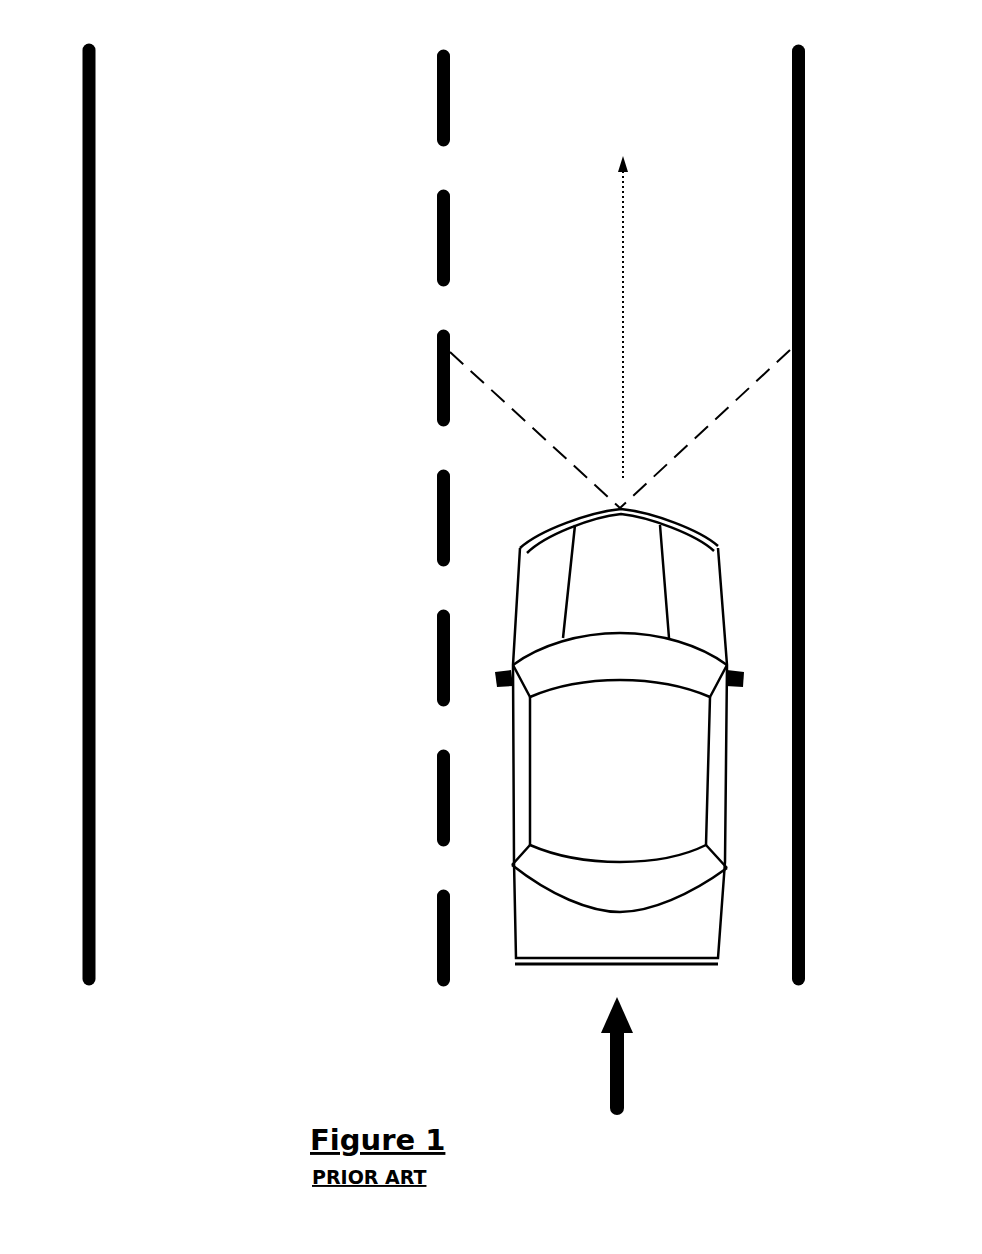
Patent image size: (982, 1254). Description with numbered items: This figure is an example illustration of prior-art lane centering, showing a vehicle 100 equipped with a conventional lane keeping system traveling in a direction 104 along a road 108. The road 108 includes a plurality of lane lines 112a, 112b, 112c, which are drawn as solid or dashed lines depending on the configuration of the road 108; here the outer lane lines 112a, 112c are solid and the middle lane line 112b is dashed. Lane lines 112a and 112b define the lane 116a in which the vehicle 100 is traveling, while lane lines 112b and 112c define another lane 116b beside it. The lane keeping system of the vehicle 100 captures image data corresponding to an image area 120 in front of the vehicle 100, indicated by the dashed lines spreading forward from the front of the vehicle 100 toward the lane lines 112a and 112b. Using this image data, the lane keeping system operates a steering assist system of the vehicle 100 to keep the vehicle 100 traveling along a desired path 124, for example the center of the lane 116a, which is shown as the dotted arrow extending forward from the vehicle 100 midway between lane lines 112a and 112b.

The vehicle 100 is at (690, 962).
The direction 104 is at (624, 1075).
The road 108 is at (465, 552).
The lane line 112a is at (805, 100).
The lane line 112b is at (450, 100).
The lane line 112c is at (95, 100).
The lane 116a is at (626, 44).
The lane 116b is at (272, 44).
The image area 120 is at (572, 497).
The desired path 124 is at (623, 265).